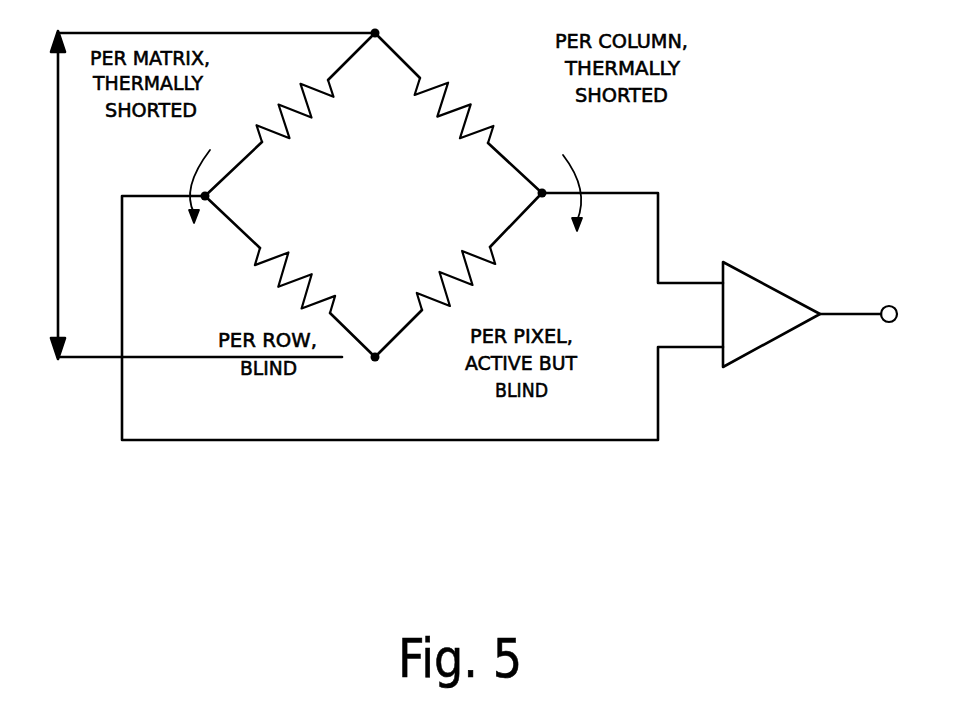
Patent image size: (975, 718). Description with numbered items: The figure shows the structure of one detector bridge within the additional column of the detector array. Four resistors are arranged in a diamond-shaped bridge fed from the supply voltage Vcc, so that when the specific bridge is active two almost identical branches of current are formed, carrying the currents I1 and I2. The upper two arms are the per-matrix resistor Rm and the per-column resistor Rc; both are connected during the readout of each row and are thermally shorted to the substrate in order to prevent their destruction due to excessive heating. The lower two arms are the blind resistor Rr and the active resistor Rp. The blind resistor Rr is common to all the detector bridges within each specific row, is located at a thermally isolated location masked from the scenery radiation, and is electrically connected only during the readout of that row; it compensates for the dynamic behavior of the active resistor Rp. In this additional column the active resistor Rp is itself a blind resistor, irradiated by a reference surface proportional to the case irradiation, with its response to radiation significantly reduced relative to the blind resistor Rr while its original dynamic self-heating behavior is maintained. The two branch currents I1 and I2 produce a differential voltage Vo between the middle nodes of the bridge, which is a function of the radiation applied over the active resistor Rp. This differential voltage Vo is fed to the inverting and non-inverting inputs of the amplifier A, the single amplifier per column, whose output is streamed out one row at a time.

The per-matrix thermally shorted resistor Rm is at (278, 108).
The per-column thermally shorted resistor Rc is at (483, 100).
The blind resistor Rr is at (278, 282).
The active resistor Rp is at (488, 282).
The supply voltage Vcc is at (36, 195).
The differential voltage Vo is at (676, 315).
The first branch current I1 is at (190, 184).
The second branch current I2 is at (588, 199).
The amplifier A is at (810, 314).